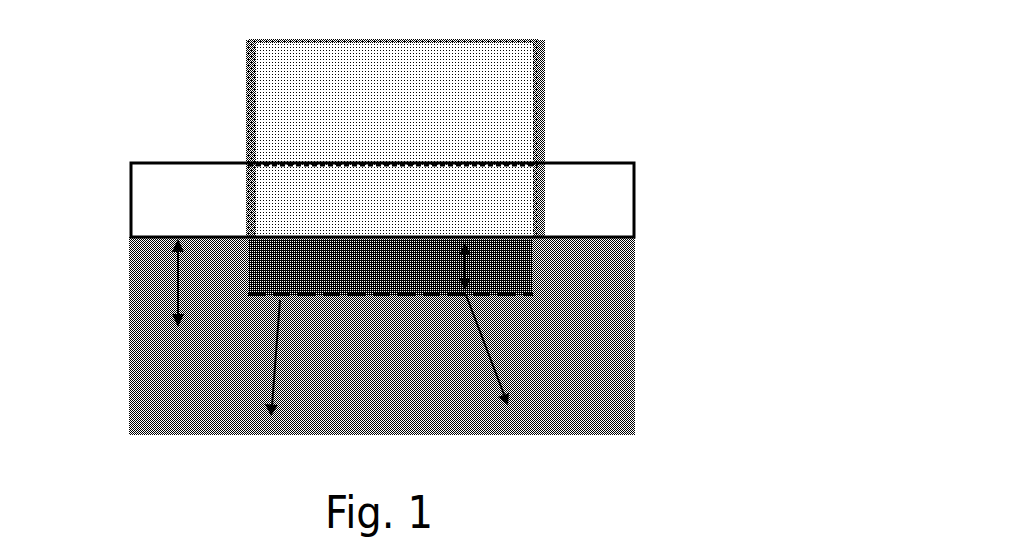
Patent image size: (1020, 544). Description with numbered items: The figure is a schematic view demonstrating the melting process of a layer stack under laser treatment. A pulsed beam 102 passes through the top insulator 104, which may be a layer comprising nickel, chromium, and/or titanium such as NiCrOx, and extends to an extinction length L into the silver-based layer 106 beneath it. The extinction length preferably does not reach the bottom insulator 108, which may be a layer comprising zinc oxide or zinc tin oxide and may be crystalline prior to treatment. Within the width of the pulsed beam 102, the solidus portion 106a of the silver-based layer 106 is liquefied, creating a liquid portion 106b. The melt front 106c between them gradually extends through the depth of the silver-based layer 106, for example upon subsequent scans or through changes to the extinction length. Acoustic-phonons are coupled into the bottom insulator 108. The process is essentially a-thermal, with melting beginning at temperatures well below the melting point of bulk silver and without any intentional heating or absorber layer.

The pulsed beam 102 is at (532, 118).
The top insulator 104 is at (604, 190).
The silver-based layer 106 is at (110, 225).
The solidus portion 106a is at (604, 325).
The liquid portion 106b is at (503, 258).
The melt front 106c is at (500, 285).
The bottom insulator 108 is at (604, 391).